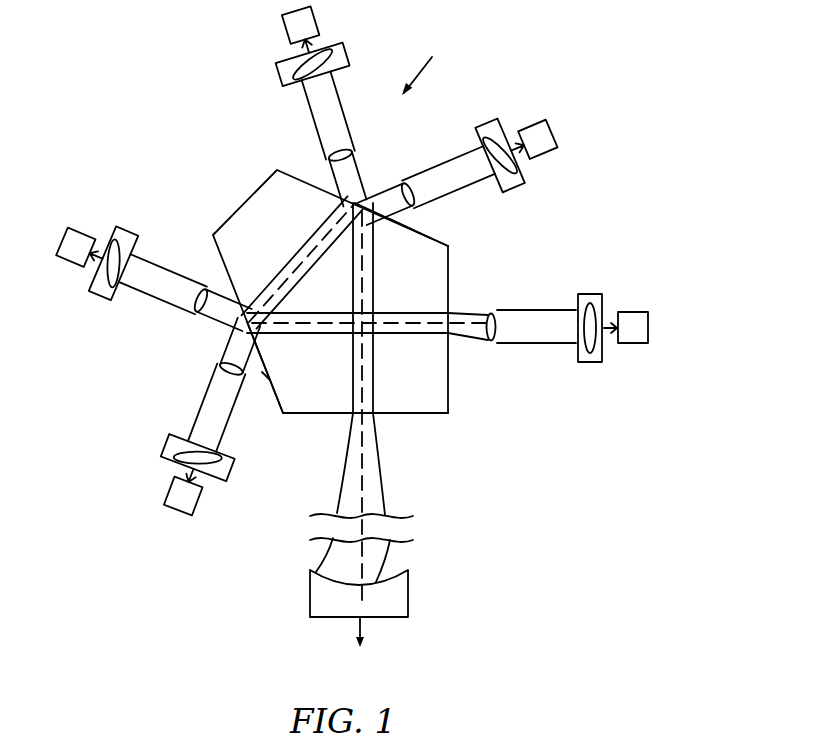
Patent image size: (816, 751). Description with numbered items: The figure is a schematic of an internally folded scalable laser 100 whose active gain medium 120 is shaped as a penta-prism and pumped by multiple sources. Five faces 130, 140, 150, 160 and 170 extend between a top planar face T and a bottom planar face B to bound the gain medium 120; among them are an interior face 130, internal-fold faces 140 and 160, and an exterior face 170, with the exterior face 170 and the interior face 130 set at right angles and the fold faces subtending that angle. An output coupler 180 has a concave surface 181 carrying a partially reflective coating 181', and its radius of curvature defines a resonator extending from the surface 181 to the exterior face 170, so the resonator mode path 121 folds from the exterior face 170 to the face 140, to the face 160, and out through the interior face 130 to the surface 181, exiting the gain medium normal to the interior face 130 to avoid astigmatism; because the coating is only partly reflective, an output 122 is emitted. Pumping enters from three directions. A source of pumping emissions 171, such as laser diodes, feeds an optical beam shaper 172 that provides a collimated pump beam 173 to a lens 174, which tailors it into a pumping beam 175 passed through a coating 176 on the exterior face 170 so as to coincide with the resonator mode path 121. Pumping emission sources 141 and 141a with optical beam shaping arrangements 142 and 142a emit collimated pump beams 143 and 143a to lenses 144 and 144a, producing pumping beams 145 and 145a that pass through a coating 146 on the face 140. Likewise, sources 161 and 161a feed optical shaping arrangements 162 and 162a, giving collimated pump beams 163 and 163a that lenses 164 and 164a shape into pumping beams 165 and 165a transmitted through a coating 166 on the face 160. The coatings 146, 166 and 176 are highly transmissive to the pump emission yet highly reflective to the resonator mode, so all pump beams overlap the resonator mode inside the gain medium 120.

The laser 100 is at (424, 62).
The gain medium 120 is at (423, 413).
The resonator mode path 121 is at (400, 462).
The output 122 is at (366, 625).
The interior face 130 is at (318, 413).
The internal-fold face 140 is at (278, 412).
The pumping emission source 141 is at (195, 512).
The pumping emission source 141a is at (78, 274).
The optical beam shaping arrangement 142 is at (228, 479).
The optical beam shaping arrangement 142a is at (126, 230).
The collimated pump beam 143 is at (218, 430).
The collimated pump beam 143a is at (150, 298).
The lens 144 is at (258, 382).
The lens 144a is at (197, 296).
The pumping beam 145 is at (228, 341).
The pumping beam 145a is at (216, 290).
The coating 146 is at (268, 378).
The face 150 is at (258, 185).
The internal-fold face 160 is at (445, 246).
The pumping emission source 161 is at (282, 25).
The pumping emission source 161a is at (538, 130).
The optical shaping arrangement 162 is at (278, 69).
The optical shaping arrangement 162a is at (515, 192).
The collimated pump beam 163 is at (300, 98).
The collimated pump beam 163a is at (455, 160).
The lens 164 is at (337, 150).
The lens 164a is at (410, 180).
The pumping beam 165 is at (340, 163).
The pumping beam 165a is at (412, 213).
The coating 166 is at (407, 236).
The exterior face 170 is at (449, 275).
The source of pumping emissions 171 is at (633, 312).
The optical beam shaper 172 is at (590, 362).
The collimated pump beam 173 is at (528, 310).
The lens 174 is at (494, 313).
The pumping beam 175 is at (468, 310).
The coating 176 is at (449, 380).
The output coupler 180 is at (408, 595).
The concave surface 181 is at (383, 555).
The coating 181' is at (423, 541).
The bottom planar face B is at (480, 248).
The top planar face T is at (436, 254).